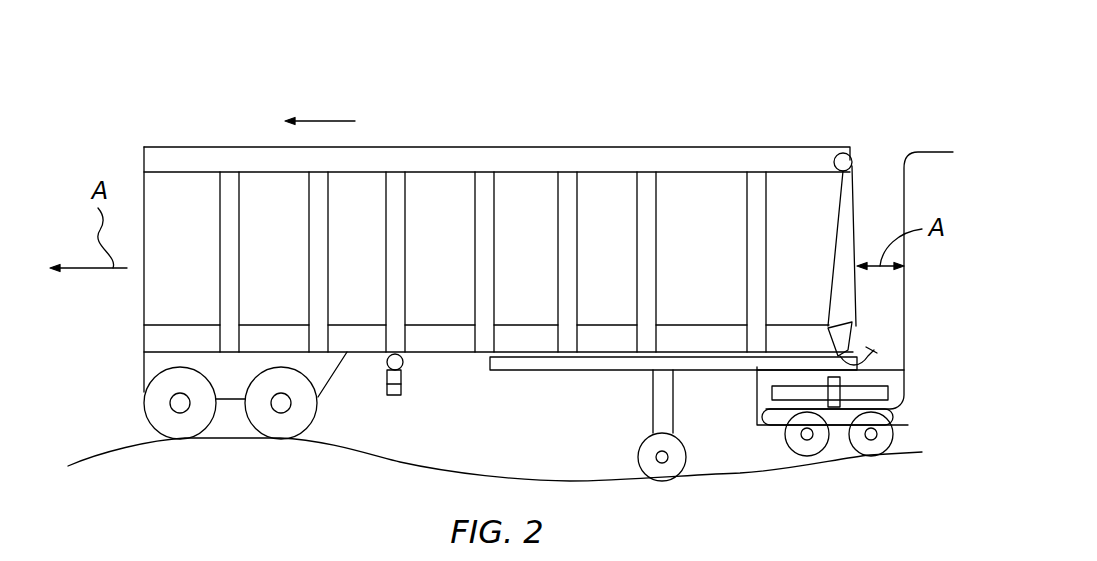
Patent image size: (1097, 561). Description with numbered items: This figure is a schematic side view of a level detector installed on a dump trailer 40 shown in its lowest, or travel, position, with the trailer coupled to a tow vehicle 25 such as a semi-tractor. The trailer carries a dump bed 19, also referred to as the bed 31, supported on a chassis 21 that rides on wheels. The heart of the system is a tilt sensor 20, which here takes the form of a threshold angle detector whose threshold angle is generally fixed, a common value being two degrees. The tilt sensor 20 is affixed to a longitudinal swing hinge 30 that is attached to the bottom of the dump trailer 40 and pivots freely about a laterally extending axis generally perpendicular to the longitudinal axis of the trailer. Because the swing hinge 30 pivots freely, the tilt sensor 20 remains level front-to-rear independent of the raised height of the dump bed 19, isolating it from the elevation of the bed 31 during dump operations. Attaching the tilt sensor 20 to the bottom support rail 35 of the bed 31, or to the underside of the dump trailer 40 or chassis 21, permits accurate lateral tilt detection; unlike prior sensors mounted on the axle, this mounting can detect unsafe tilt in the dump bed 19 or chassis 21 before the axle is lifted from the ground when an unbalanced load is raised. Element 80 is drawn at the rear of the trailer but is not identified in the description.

The dump bed 19 is at (682, 115).
The tilt sensor 20 is at (401, 385).
The chassis 21 is at (120, 358).
The tow vehicle 25 is at (915, 140).
The swing hinge 30 is at (404, 362).
The bed 31 is at (432, 138).
The bottom support rail 35 is at (368, 352).
The dump trailer 40 is at (553, 90).
The rear gate 80 is at (866, 222).